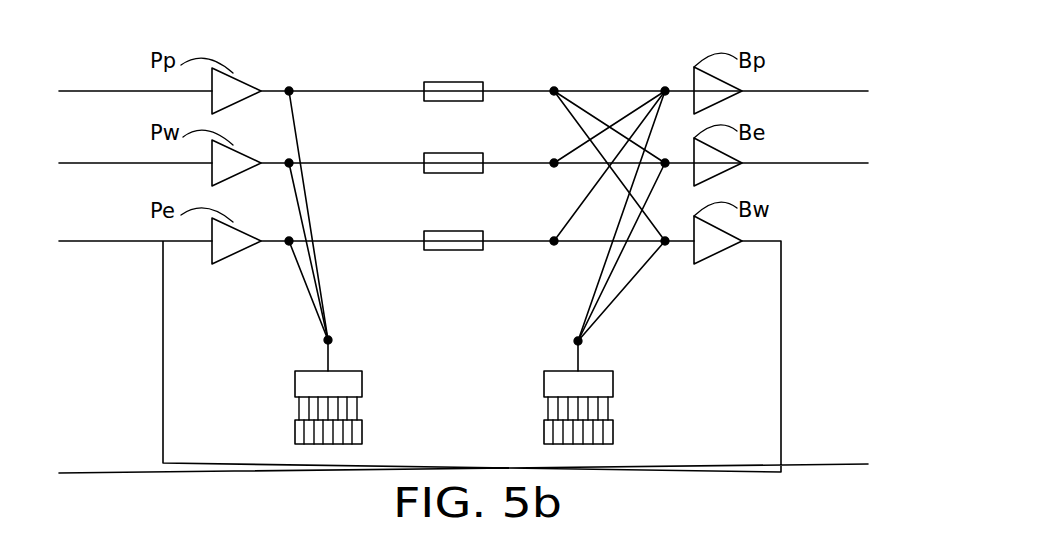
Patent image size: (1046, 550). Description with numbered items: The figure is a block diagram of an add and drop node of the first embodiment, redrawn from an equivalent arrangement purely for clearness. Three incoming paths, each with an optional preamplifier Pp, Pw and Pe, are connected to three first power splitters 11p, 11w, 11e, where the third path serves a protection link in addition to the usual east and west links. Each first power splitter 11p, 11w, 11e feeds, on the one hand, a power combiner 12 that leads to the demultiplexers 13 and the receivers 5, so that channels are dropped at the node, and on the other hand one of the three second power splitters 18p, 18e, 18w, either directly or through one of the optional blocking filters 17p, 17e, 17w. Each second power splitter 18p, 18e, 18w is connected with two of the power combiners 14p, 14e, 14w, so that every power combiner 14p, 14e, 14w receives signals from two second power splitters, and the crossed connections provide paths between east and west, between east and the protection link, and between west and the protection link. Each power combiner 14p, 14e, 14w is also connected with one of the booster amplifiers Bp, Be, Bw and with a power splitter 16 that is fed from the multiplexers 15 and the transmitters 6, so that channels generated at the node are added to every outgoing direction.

The first power splitter 11p is at (289, 91).
The first power splitter 11w is at (289, 163).
The first power splitter 11e is at (289, 241).
The power combiner 12 is at (328, 340).
The demultiplexers 13 is at (295, 382).
The receivers 5 is at (295, 432).
The blocking filter 17p is at (450, 82).
The blocking filter 17e is at (455, 153).
The blocking filter 17w is at (455, 231).
The second power splitter 18p is at (554, 91).
The second power splitter 18e is at (554, 163).
The second power splitter 18w is at (554, 241).
The power combiner 14p is at (665, 91).
The power combiner 14e is at (665, 163).
The power combiner 14w is at (665, 245).
The power splitter 16 is at (580, 340).
The multiplexers 15 is at (613, 380).
The transmitters 6 is at (613, 433).